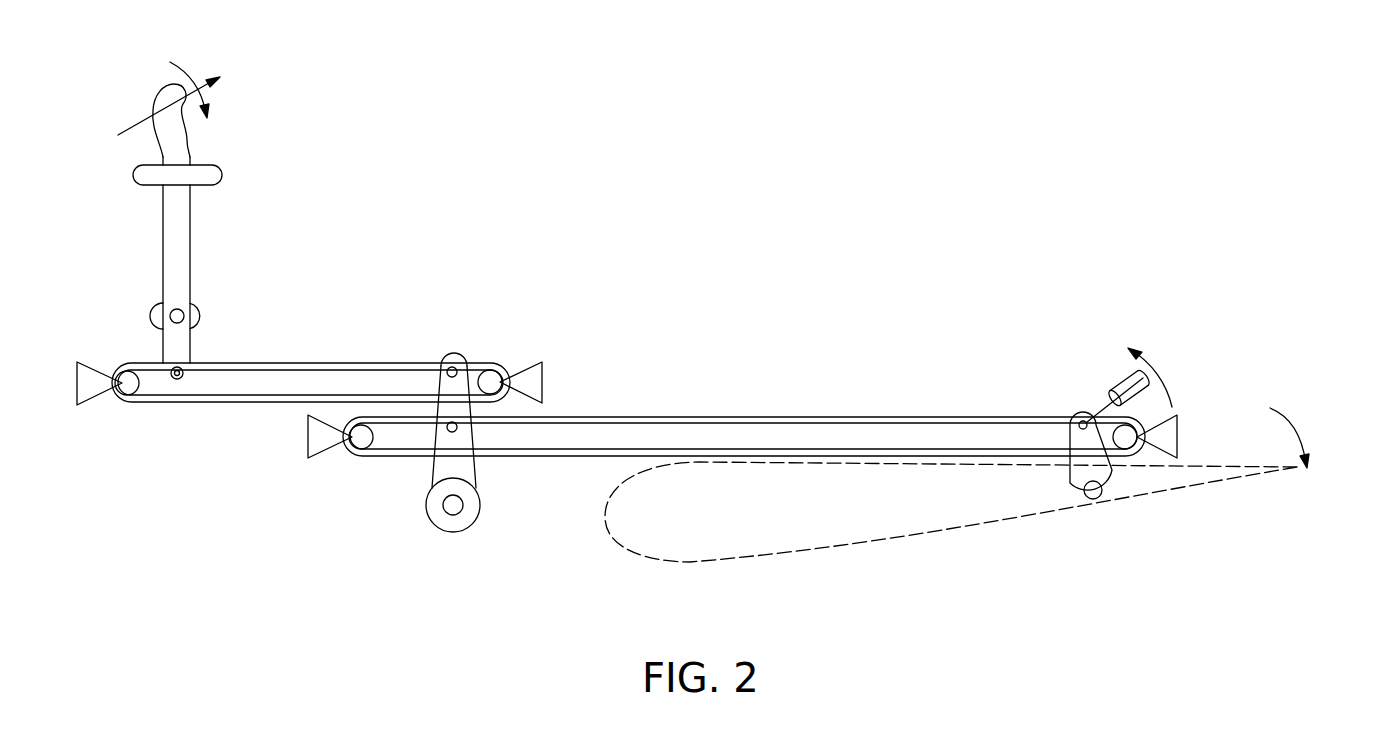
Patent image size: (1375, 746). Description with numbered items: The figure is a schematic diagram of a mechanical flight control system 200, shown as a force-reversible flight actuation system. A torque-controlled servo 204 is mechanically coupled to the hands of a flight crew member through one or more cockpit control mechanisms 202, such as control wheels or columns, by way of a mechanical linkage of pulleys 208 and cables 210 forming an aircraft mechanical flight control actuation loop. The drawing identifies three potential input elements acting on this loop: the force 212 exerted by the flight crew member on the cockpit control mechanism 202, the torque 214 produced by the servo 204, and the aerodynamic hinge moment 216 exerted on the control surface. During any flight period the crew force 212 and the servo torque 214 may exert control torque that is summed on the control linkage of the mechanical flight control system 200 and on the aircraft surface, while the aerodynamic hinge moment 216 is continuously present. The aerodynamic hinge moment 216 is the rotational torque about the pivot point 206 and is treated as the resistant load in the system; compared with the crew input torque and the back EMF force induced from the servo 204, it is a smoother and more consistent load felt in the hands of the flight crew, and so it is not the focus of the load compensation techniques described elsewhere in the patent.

The mechanical flight control system 200 is at (1017, 138).
The cockpit control mechanism 202 is at (200, 242).
The torque-controlled servo 204 is at (1115, 387).
The pivot point 206 is at (1093, 502).
The pulleys 208 is at (517, 365).
The cables 210 is at (725, 418).
The force 212 is at (187, 80).
The servo torque 214 is at (1157, 370).
The aerodynamic hinge moment 216 is at (1295, 433).